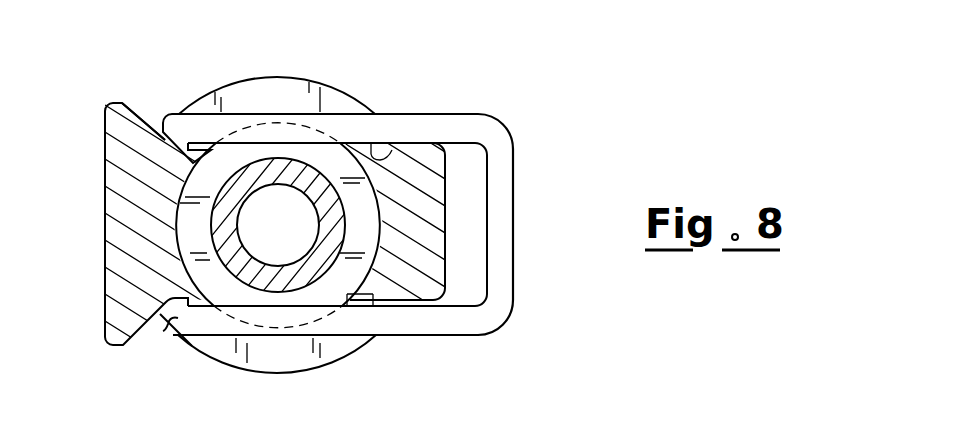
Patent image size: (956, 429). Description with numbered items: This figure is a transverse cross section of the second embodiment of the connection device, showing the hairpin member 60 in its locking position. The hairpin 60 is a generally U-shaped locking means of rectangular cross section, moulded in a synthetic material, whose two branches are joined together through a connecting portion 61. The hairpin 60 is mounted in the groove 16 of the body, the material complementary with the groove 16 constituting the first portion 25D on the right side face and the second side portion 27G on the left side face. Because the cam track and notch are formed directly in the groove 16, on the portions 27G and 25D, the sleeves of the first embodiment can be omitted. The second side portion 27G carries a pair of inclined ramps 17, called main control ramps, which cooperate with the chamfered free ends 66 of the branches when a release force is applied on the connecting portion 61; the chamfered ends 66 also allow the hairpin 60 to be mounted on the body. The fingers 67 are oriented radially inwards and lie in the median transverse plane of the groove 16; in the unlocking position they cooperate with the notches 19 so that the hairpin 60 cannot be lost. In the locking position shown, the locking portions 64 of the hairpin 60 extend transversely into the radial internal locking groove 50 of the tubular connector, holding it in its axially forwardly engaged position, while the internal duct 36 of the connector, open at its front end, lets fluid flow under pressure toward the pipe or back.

The groove 16 is at (310, 373).
The inclined ramps 17 is at (132, 113).
The notches 19 is at (390, 153).
The first portion 25D is at (413, 197).
The second side portion 27G is at (130, 218).
The internal duct 36 is at (278, 225).
The radial internal locking groove 50 is at (192, 200).
The hairpin member 60 is at (543, 283).
The connecting portion 61 is at (505, 237).
The locking portions 64 is at (272, 128).
The chamfered free ends 66 is at (168, 133).
The fingers 67 is at (165, 331).